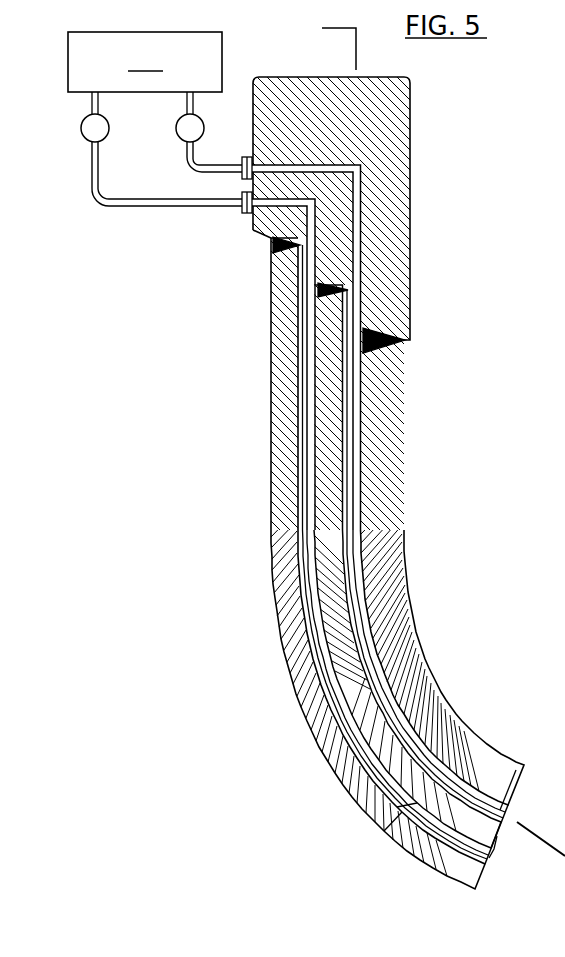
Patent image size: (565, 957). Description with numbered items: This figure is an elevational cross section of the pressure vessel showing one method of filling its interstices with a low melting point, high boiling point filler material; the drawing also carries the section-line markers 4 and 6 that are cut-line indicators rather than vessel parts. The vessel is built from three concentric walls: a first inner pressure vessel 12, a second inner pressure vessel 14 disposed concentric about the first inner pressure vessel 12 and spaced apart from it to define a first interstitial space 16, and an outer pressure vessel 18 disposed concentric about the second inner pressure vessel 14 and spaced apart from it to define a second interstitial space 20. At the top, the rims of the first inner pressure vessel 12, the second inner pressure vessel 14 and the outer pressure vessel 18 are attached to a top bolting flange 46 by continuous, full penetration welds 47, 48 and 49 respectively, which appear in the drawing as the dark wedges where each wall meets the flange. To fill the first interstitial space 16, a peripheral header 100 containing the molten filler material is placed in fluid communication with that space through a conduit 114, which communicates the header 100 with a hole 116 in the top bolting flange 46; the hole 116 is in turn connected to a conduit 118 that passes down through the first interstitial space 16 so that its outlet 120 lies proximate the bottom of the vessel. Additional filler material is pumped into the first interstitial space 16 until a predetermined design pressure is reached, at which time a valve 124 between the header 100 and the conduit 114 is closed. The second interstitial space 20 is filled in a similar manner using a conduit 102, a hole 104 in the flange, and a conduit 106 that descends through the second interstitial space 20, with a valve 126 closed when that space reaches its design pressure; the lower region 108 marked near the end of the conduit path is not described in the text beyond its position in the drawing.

The section line indicator 4 is at (560, 120).
The section line 6- 6 is at (435, 461).
The first inner pressure vessel 12 is at (404, 528).
The second inner pressure vessel 14 is at (490, 832).
The first interstitial space 16 is at (508, 811).
The outer pressure vessel 18 is at (270, 530).
The second interstitial space 20 is at (456, 879).
The top bolting flange 46 is at (408, 111).
The continuous full penetration weld 47 is at (402, 337).
The continuous full penetration weld 48 is at (322, 291).
The continuous full penetration weld 49 is at (273, 241).
The peripheral header 100 is at (145, 62).
The conduit 102 is at (168, 205).
The hole 104 is at (283, 208).
The conduit 106 is at (308, 333).
The conductor connection 108 is at (407, 820).
The conduit 114 is at (186, 164).
The hole 116 is at (318, 166).
The conduit 118 is at (363, 378).
The outlet 120 is at (519, 791).
The valve 124 is at (176, 128).
The valve 126 is at (81, 128).